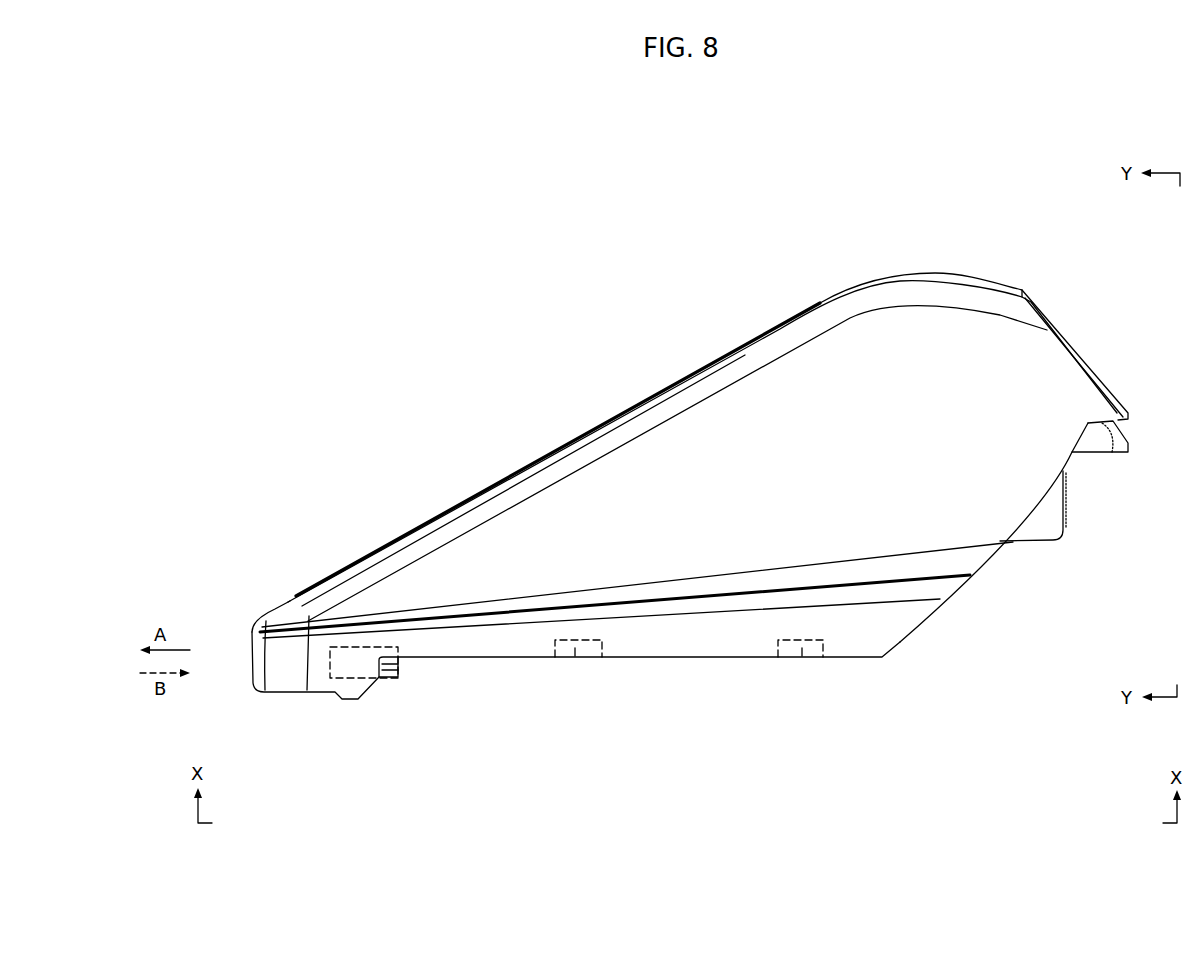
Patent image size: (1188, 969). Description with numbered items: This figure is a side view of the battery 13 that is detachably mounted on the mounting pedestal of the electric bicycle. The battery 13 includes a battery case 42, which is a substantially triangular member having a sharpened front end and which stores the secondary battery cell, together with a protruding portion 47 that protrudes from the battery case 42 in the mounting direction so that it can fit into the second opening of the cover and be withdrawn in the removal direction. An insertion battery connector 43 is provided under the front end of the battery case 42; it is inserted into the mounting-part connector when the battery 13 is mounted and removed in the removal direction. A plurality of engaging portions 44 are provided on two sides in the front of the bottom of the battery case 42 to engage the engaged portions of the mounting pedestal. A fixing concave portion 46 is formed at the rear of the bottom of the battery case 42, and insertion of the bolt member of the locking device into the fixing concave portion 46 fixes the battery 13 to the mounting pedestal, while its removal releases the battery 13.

The battery 13 is at (645, 377).
The battery case 42 is at (912, 318).
The insertion battery connector 43 is at (399, 664).
The engaging portions 44 is at (576, 660).
The fixing concave portion 46 is at (1098, 443).
The protruding portion 47 is at (1042, 528).